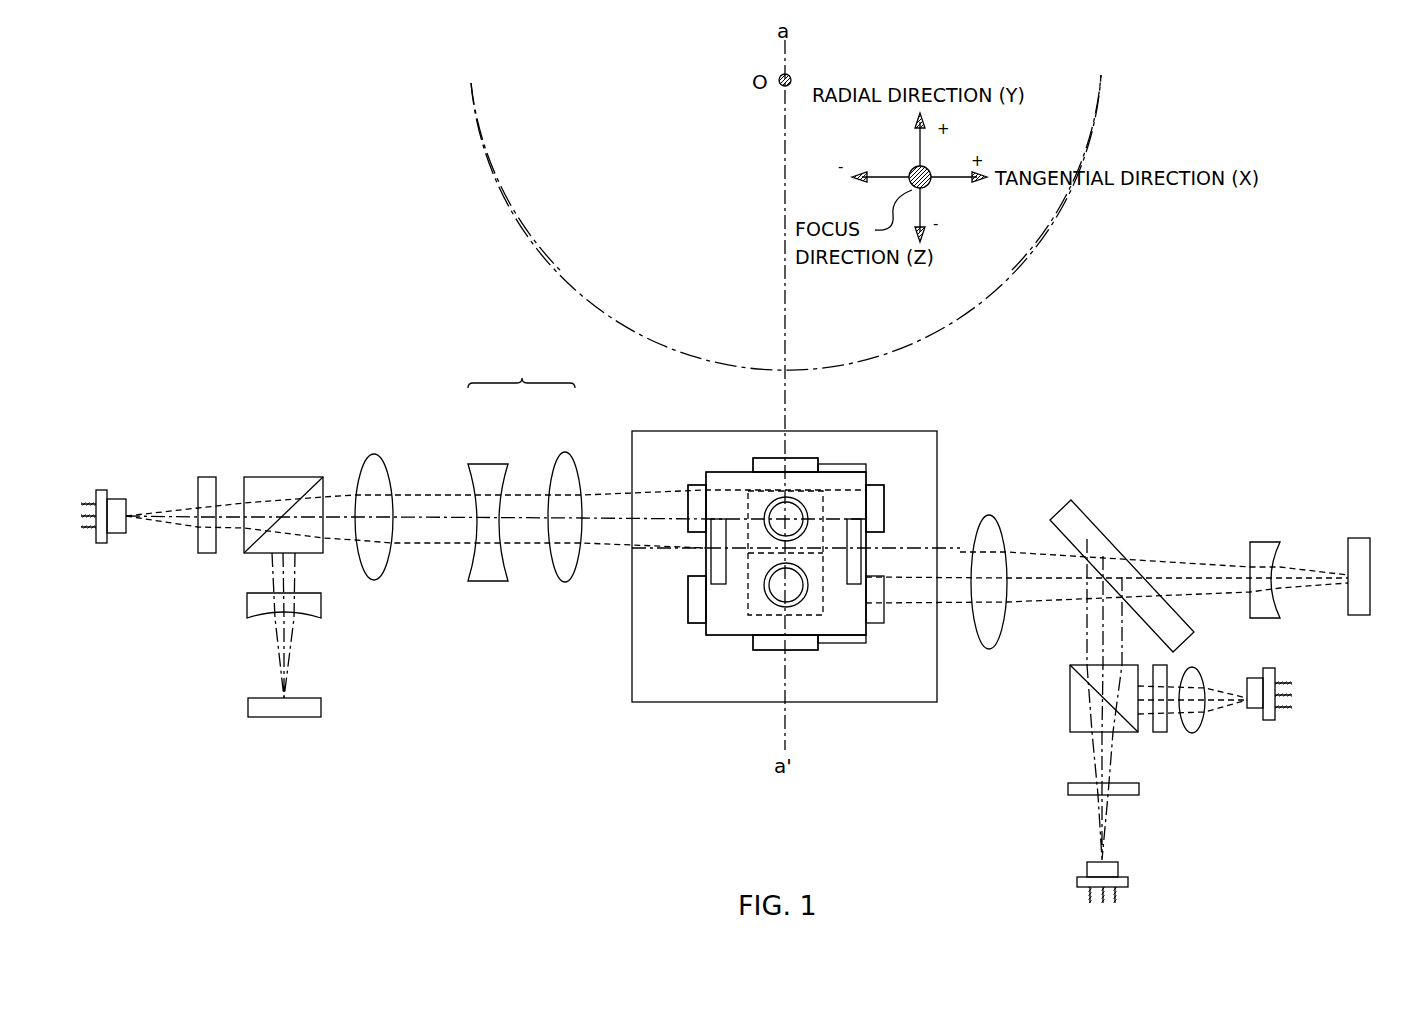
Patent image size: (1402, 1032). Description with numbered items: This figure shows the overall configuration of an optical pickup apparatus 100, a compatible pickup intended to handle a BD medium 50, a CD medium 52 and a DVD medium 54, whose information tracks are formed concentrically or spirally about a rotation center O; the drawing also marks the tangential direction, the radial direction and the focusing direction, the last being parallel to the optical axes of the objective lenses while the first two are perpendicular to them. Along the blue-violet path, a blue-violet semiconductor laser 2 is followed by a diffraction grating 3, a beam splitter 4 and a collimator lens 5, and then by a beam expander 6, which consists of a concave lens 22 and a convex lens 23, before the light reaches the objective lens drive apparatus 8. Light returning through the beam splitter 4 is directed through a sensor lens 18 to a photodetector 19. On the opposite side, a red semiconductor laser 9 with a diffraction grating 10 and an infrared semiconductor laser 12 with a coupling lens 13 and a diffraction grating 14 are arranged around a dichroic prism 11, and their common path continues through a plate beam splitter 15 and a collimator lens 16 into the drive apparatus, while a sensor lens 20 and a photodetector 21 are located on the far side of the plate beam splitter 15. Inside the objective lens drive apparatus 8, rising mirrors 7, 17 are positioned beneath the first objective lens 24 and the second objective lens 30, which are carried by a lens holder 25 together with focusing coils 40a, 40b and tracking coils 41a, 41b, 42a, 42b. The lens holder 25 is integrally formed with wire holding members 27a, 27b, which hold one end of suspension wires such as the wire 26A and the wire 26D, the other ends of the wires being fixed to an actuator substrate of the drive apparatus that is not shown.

The blue-violet semiconductor laser 2 is at (101, 487).
The diffraction grating 3 is at (207, 475).
The beam splitter 4 is at (278, 475).
The collimator lens 5 is at (374, 453).
The beam expander 6 is at (525, 467).
The concave lens 22 is at (484, 462).
The convex lens 23 is at (565, 452).
The sensor lens 18 is at (322, 606).
The photodetector 19 is at (322, 706).
The rising mirror 7 is at (826, 503).
The objective lens drive apparatus 8 is at (632, 612).
The rising mirror 17 is at (706, 608).
The first objective lens 24 is at (709, 505).
The lens holder 25 is at (715, 637).
The wire holding member 27a is at (757, 458).
The wire holding member 27b is at (800, 652).
The suspension wire 26A is at (845, 462).
The suspension wire 26D is at (848, 648).
The second objective lens 30 is at (718, 578).
The focusing coil 40a is at (688, 500).
The focusing coil 40b is at (870, 532).
The tracking coil 41a is at (884, 494).
The tracking coil 41b is at (884, 616).
The tracking coil 42a is at (688, 522).
The tracking coil 42b is at (688, 612).
The collimator lens 16 is at (1006, 530).
The plate beam splitter 15 is at (1090, 527).
The sensor lens 20 is at (1265, 541).
The photodetector 21 is at (1360, 538).
The dichroic prism 11 is at (1070, 700).
The infrared semiconductor laser 12 is at (1272, 721).
The coupling lens 13 is at (1195, 733).
The diffraction grating 14 is at (1158, 733).
The diffraction grating 10 is at (1140, 790).
The red semiconductor laser 9 is at (1130, 882).
The optical pickup apparatus 100 is at (1107, 402).
The BD medium 50 is at (1043, 238).
The CD medium 52 is at (515, 176).
The DVD medium 54 is at (1056, 172).